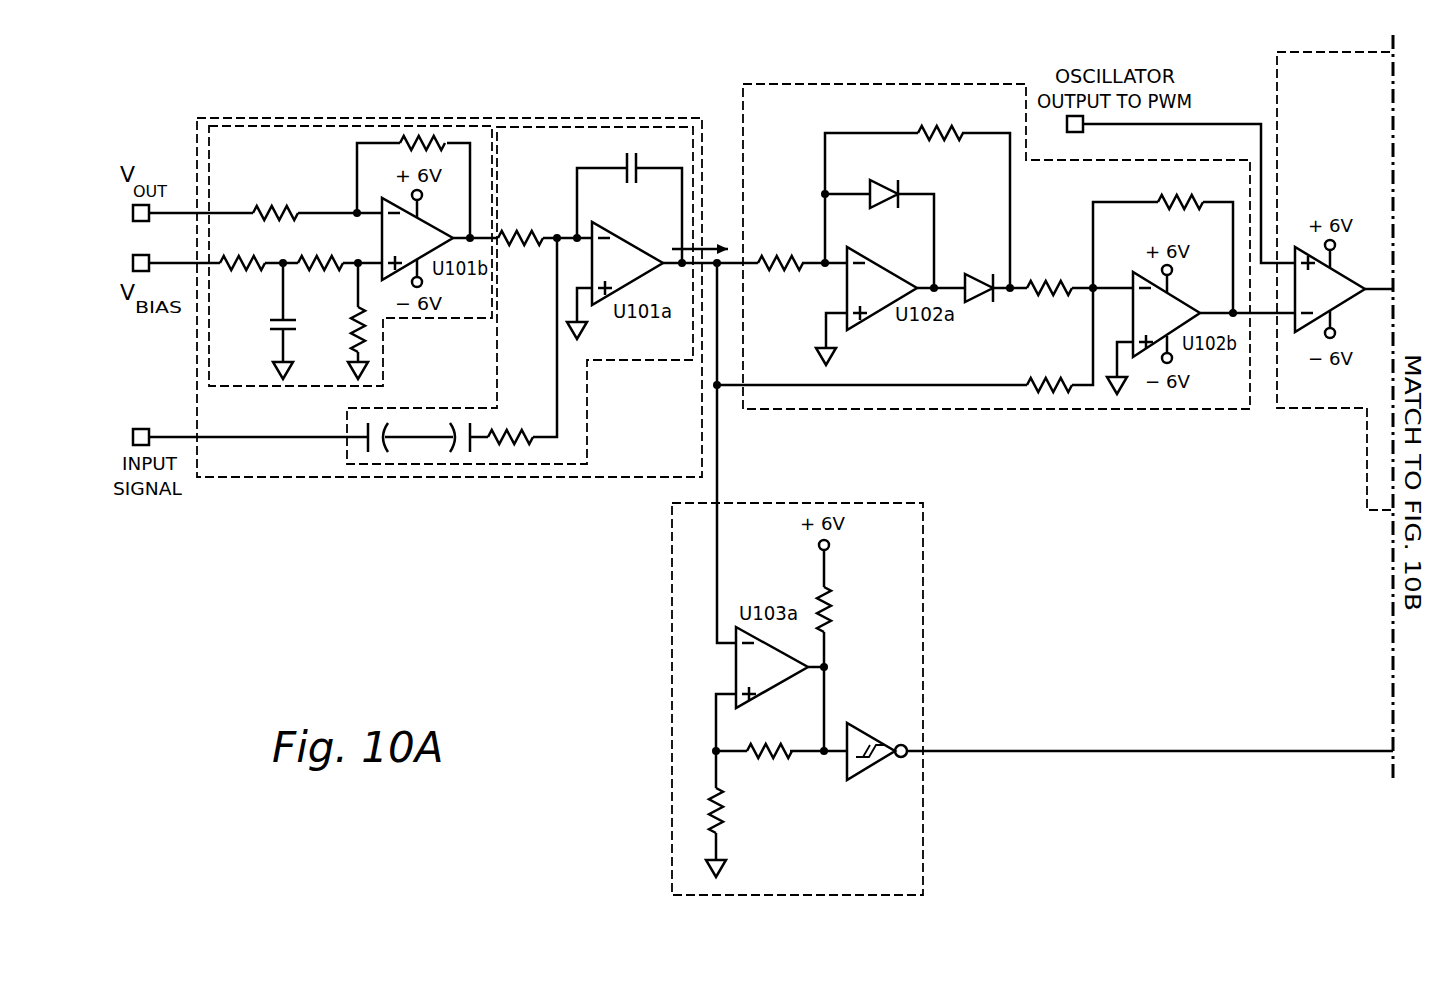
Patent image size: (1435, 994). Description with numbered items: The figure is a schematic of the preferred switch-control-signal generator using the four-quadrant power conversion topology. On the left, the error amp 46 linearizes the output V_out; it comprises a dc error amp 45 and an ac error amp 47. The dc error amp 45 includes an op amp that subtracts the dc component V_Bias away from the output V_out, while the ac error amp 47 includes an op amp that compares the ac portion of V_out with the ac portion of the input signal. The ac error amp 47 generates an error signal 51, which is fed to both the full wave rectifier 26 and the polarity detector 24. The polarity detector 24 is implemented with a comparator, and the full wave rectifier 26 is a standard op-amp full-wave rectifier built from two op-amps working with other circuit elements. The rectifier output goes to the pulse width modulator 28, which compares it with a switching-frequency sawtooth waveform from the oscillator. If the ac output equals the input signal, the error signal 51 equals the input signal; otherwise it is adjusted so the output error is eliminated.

The polarity detector 24 is at (747, 503).
The full wave rectifier 26 is at (812, 410).
The pulse width modulator 28 is at (1277, 98).
The dc error amp 45 is at (303, 387).
The error amp 46 is at (542, 118).
The ac error amp 47 is at (588, 403).
The error signal 51 is at (700, 239).